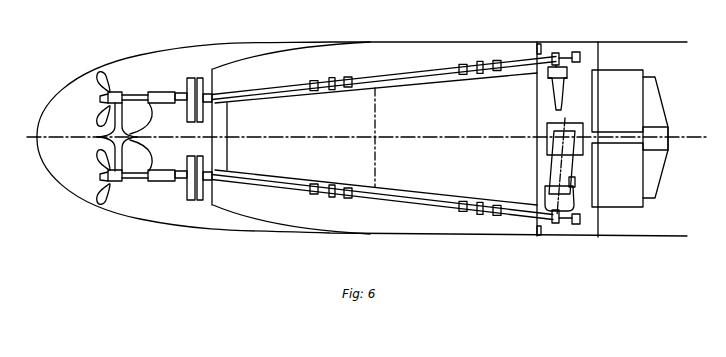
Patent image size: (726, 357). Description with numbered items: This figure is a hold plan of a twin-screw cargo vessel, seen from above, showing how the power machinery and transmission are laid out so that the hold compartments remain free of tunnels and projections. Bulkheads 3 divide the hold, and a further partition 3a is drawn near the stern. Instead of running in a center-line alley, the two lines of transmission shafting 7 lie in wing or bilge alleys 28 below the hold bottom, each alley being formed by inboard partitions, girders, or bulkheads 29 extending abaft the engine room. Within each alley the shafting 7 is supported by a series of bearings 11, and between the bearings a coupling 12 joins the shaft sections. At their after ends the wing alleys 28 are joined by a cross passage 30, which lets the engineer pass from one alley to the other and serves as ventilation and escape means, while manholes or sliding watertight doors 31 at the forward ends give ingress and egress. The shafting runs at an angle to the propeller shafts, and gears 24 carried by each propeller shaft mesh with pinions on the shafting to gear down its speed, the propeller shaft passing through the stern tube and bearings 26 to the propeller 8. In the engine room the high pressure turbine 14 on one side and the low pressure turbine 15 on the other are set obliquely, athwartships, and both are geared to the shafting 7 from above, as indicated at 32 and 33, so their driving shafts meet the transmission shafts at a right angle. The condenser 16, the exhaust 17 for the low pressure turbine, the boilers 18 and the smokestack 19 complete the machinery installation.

The bulkheads 3 is at (228, 133).
The frame partition 3a is at (215, 152).
The transmission shafting 7 is at (405, 79).
The propeller 8 is at (94, 109).
The bearings 11 is at (495, 70).
The coupling 12 is at (483, 60).
The high pressure turbine 14 is at (551, 88).
The low pressure turbine 15 is at (573, 199).
The condenser 16 is at (555, 128).
The exhaust for the low pressure turbine 17 is at (556, 162).
The boilers 18 is at (608, 83).
The smokestack 19 is at (665, 135).
The gears 24 is at (193, 156).
The stern tube and bearings 26 is at (164, 88).
The wing alleys 28 is at (433, 55).
The inboard partitions, girders, or bulkheads 29 is at (441, 84).
The cross passage 30 is at (220, 103).
The manholes or sliding watertight doors 31 is at (543, 48).
The gearing of high pressure turbine 32 is at (559, 54).
The gearing of low pressure turbine 33 is at (553, 224).